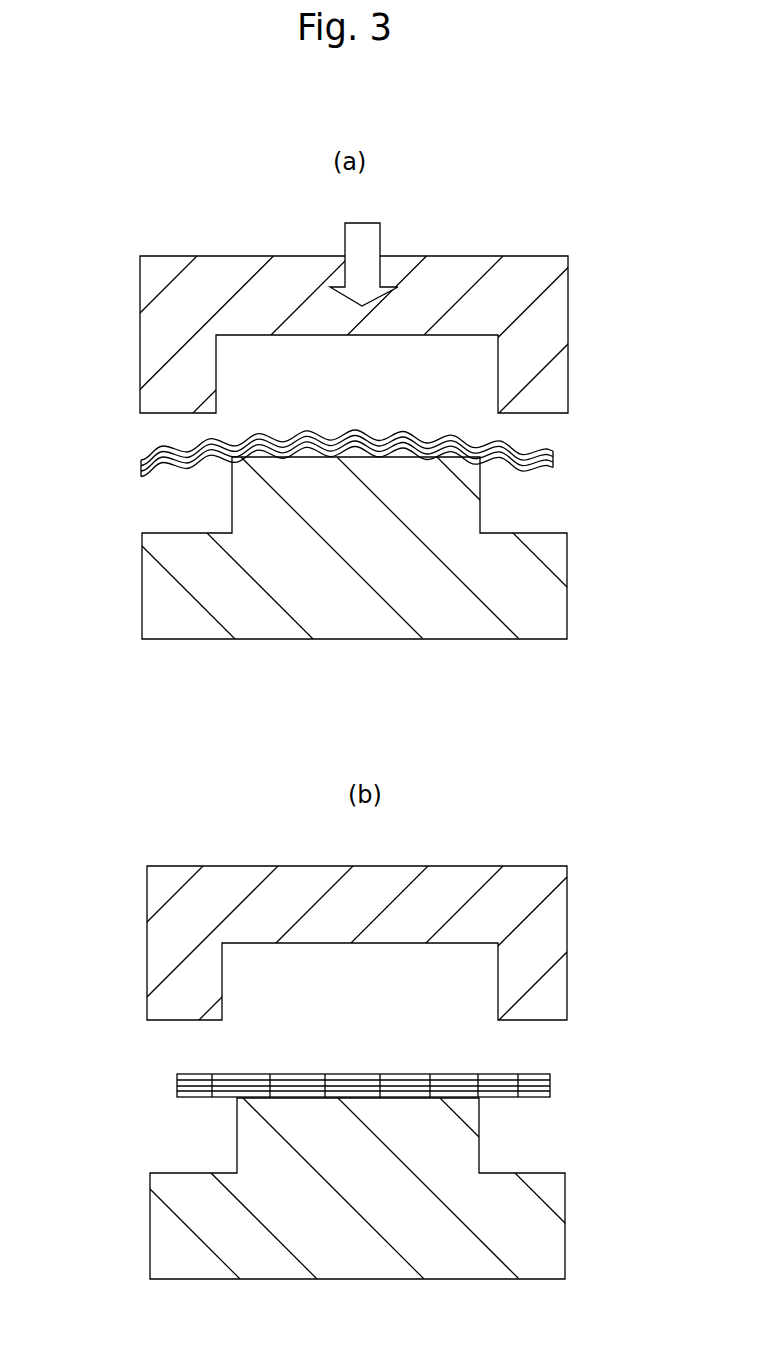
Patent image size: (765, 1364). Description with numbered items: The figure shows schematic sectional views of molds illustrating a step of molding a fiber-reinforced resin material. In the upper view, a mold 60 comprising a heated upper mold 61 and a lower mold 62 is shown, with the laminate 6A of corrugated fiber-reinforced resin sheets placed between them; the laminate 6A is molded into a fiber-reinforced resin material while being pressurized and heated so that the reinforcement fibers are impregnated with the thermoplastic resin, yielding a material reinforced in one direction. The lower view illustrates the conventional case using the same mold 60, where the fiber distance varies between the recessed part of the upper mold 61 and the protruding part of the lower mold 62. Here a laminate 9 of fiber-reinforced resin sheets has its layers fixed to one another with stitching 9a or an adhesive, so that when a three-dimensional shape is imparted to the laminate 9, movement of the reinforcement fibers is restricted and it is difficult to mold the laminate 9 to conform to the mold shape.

The mold 60 is at (351, 714).
The upper mold 61 is at (552, 323).
The lower mold 62 is at (560, 610).
The laminate 6A is at (138, 460).
The laminate of fiber-reinforced resin sheets 9 is at (324, 1079).
The stitching 9a is at (212, 1073).